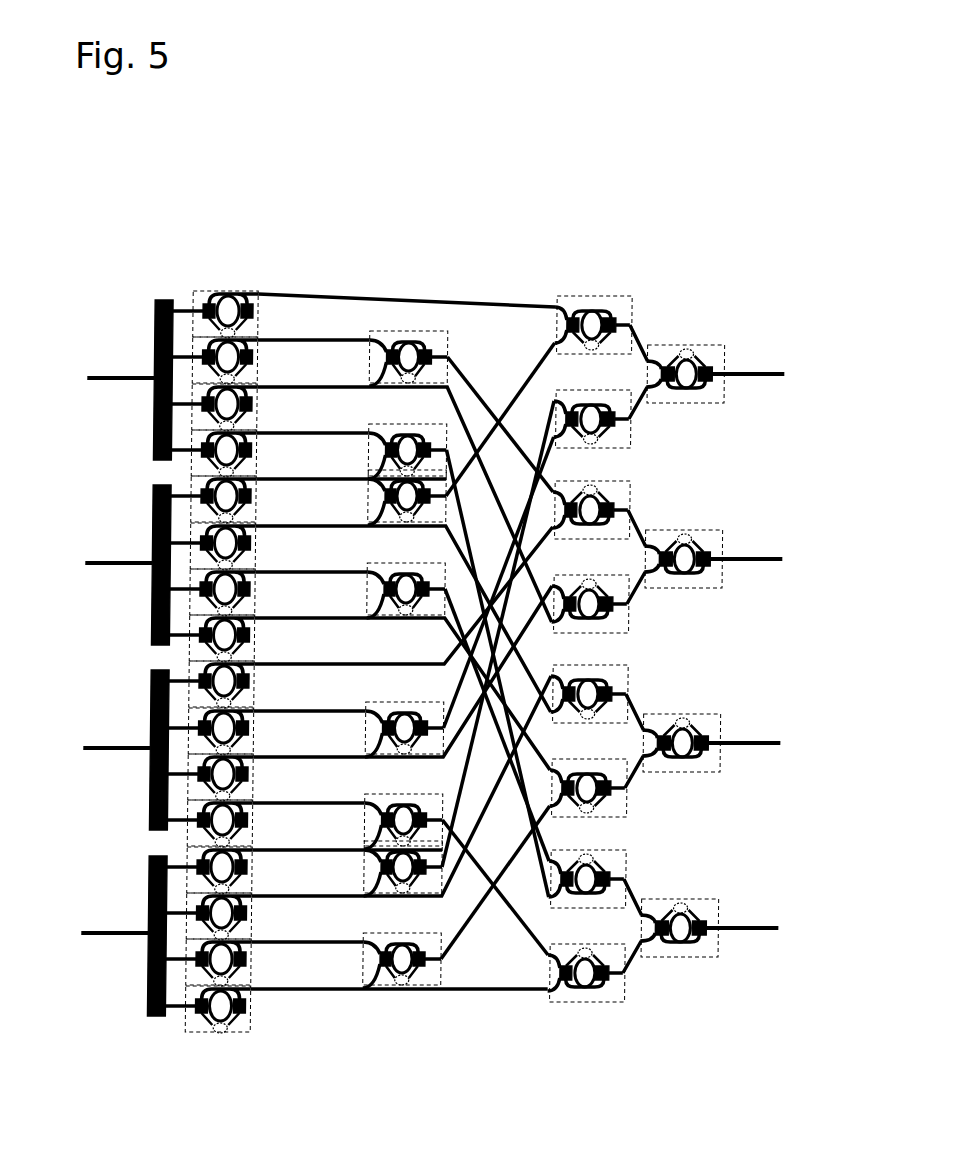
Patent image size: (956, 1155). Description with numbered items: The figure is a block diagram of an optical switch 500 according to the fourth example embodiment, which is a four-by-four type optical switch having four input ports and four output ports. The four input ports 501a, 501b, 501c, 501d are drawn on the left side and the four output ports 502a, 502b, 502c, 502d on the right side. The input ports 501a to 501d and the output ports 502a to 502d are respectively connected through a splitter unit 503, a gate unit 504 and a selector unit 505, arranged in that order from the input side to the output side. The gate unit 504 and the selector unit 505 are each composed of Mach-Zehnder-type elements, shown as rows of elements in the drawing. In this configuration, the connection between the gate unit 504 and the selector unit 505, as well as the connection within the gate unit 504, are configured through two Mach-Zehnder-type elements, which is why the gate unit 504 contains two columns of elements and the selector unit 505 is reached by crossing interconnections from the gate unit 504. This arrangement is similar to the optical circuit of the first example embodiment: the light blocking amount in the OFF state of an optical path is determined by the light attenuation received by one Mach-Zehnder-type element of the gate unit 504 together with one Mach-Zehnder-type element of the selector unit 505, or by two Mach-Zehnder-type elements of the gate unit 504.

The optical switch 500 is at (556, 190).
The input port 501a is at (100, 372).
The input port 501b is at (100, 557).
The input port 501c is at (100, 742).
The input port 501d is at (100, 927).
The output port 502a is at (767, 370).
The output port 502b is at (767, 555).
The output port 502c is at (767, 739).
The output port 502d is at (767, 924).
The splitter unit 503 is at (188, 272).
The gate unit 504 is at (457, 272).
The selector unit 505 is at (715, 272).